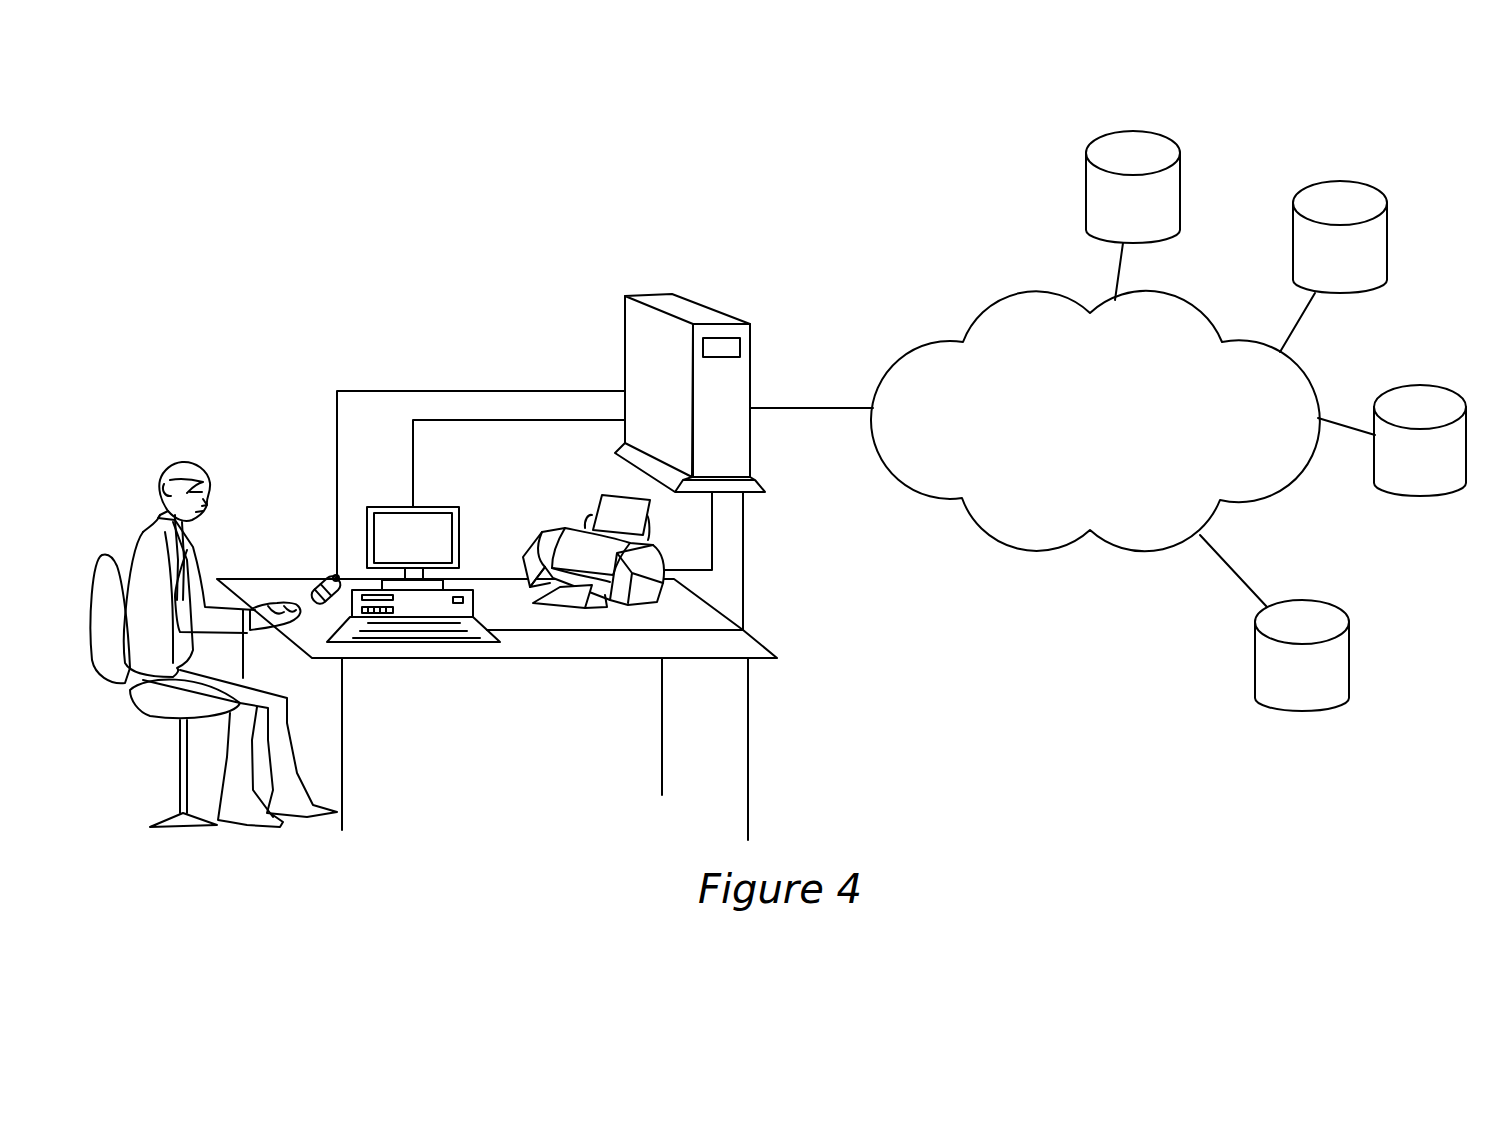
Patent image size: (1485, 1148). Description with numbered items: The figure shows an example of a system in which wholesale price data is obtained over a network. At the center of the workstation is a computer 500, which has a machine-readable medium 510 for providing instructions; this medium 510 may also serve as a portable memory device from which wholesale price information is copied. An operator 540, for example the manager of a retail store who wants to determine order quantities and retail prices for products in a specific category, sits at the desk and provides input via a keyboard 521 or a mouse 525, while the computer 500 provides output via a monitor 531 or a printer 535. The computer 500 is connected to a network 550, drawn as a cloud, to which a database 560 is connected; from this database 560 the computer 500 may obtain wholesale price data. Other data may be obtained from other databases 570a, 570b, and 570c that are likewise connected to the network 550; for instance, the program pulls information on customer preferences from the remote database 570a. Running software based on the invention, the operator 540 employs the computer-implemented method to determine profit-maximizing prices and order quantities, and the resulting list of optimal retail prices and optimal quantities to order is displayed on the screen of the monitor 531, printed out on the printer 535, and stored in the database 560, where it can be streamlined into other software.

The computer 500 is at (720, 363).
The machine-readable medium 510 is at (733, 348).
The keyboard 521 is at (482, 641).
The mouse 525 is at (333, 577).
The monitor 531 is at (388, 505).
The printer 535 is at (553, 527).
The operator 540 is at (180, 458).
The network 550 is at (1095, 421).
The database 560 is at (1303, 600).
The database 570a is at (1133, 132).
The database 570b is at (1340, 182).
The database 570c is at (1422, 384).